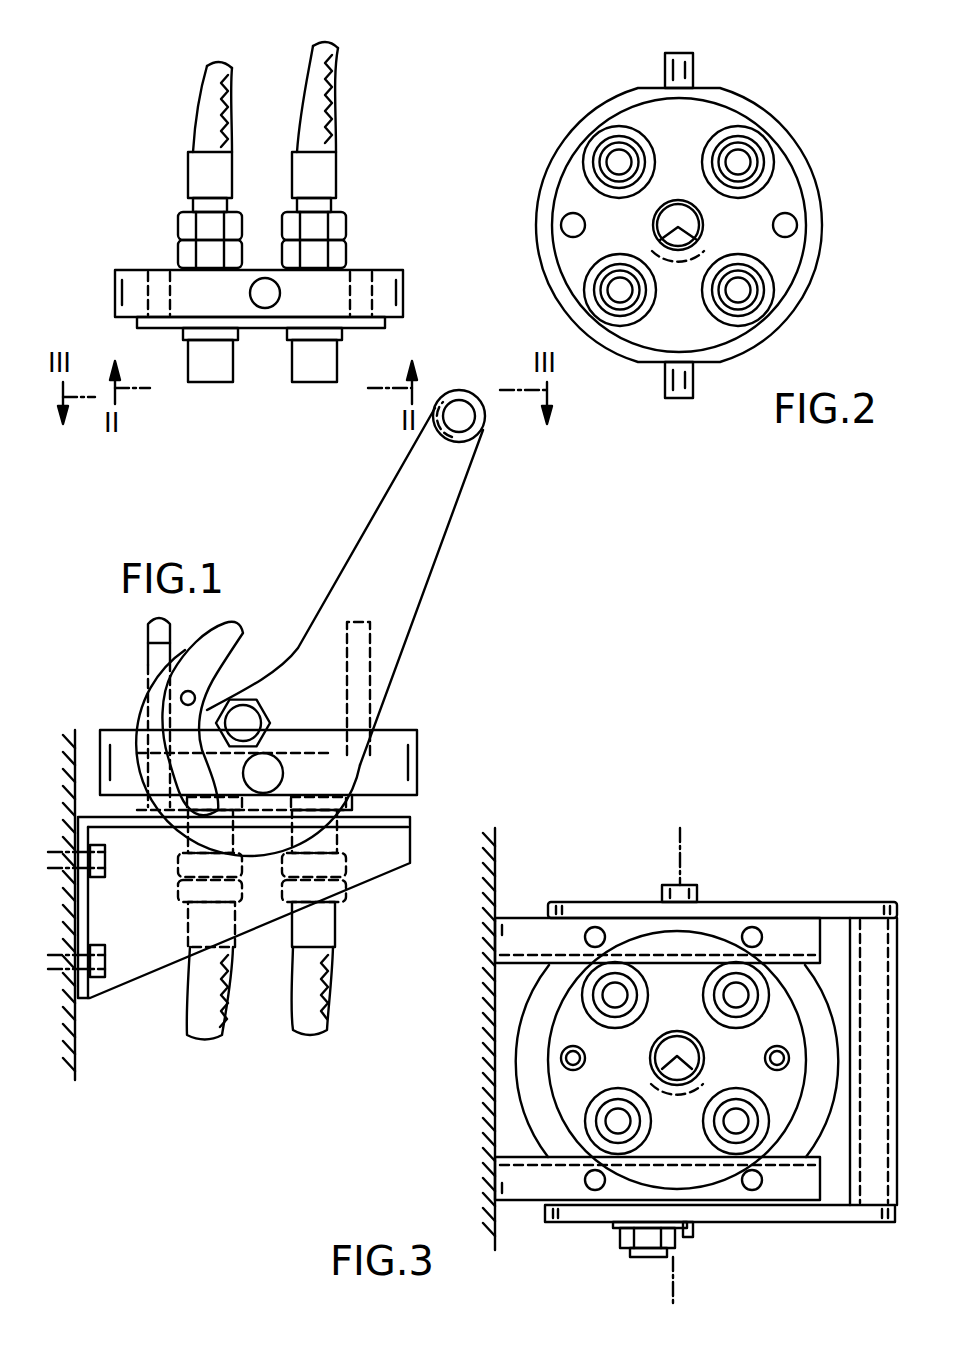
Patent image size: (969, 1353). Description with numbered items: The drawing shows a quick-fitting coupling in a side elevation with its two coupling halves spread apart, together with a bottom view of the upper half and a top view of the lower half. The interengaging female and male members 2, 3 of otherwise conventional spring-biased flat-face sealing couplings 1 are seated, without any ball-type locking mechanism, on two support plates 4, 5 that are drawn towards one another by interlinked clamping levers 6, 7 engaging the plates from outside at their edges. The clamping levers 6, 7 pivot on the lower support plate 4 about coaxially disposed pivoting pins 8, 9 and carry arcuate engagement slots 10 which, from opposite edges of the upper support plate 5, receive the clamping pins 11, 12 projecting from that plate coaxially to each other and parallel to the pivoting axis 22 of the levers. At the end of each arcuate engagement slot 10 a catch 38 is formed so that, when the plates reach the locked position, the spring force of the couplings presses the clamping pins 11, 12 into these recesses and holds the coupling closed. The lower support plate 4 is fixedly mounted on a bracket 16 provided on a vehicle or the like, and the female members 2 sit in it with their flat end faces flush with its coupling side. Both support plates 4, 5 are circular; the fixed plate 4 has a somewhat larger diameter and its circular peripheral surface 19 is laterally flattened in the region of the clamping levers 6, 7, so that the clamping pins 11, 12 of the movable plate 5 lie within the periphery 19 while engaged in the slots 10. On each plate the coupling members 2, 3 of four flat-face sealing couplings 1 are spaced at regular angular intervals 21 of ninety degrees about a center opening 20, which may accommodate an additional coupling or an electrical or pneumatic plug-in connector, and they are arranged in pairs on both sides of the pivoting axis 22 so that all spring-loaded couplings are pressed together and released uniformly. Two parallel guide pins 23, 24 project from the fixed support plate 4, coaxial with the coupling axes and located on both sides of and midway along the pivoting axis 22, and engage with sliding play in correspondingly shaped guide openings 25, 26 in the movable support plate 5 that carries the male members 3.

In FIG. 1, the flat-face sealing coupling 1 is at (424, 656).
In FIG. 3, the female member 2 is at (614, 990).
In FIG. 1, the male member 3 is at (213, 378).
In FIG. 2, the male member 3 is at (747, 153).
In FIG. 1, the support plate 4 is at (412, 777).
In FIG. 3, the support plate 4 is at (510, 1124).
In FIG. 1, the support plate 5 is at (403, 292).
In FIG. 2, the support plate 5 is at (820, 160).
In FIG. 1, the clamping lever 6 is at (432, 533).
In FIG. 3, the clamping lever 6 is at (718, 1220).
In FIG. 3, the clamping lever 7 is at (752, 902).
In FIG. 1, the pivoting pin 8 is at (270, 773).
In FIG. 3, the pivoting pin 8 is at (688, 1238).
In FIG. 3, the pivoting pin 9 is at (685, 887).
In FIG. 1, the arcuate engagement slot 10 is at (180, 697).
In FIG. 1, the clamping pin 11 is at (265, 279).
In FIG. 2, the clamping pin 11 is at (695, 55).
In FIG. 2, the clamping pin 12 is at (682, 400).
In FIG. 1, the bracket 16 is at (383, 857).
In FIG. 3, the circular peripheral surface 19 is at (792, 945).
In FIG. 2, the center opening 20 is at (680, 203).
In FIG. 3, the center opening 20 is at (677, 1038).
In FIG. 2, the regular angular intervals 21 is at (680, 270).
In FIG. 3, the regular angular intervals 21 is at (677, 1098).
In FIG. 3, the pivoting axis 22 is at (683, 826).
In FIG. 1, the guide pin 23 is at (150, 636).
In FIG. 3, the guide pin 23 is at (560, 1058).
In FIG. 1, the guide pin 24 is at (345, 625).
In FIG. 3, the guide pin 24 is at (764, 1058).
In FIG. 2, the guide opening 25 is at (565, 228).
In FIG. 2, the guide opening 26 is at (792, 223).
In FIG. 1, the catch 38 is at (167, 800).